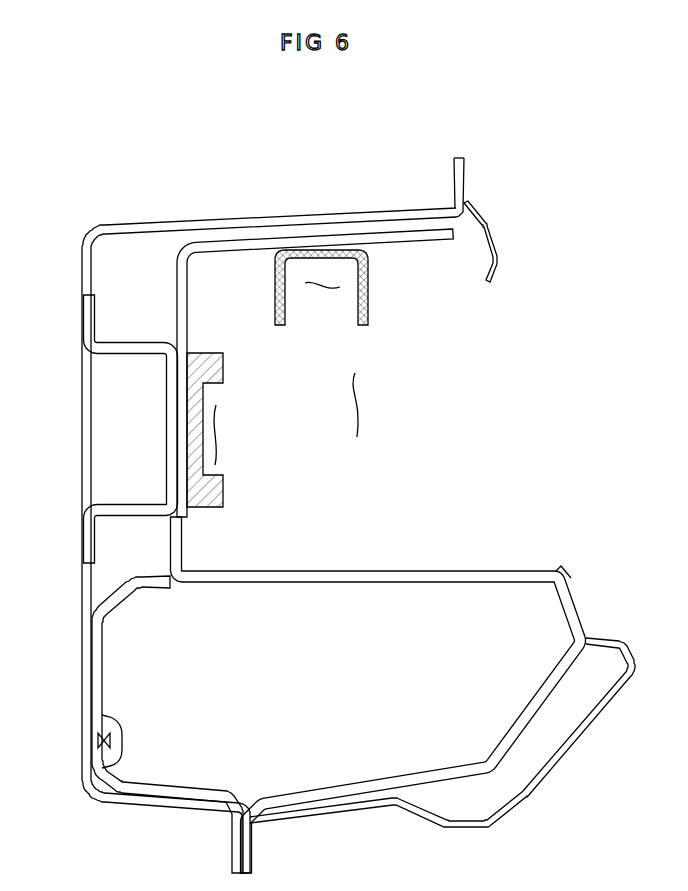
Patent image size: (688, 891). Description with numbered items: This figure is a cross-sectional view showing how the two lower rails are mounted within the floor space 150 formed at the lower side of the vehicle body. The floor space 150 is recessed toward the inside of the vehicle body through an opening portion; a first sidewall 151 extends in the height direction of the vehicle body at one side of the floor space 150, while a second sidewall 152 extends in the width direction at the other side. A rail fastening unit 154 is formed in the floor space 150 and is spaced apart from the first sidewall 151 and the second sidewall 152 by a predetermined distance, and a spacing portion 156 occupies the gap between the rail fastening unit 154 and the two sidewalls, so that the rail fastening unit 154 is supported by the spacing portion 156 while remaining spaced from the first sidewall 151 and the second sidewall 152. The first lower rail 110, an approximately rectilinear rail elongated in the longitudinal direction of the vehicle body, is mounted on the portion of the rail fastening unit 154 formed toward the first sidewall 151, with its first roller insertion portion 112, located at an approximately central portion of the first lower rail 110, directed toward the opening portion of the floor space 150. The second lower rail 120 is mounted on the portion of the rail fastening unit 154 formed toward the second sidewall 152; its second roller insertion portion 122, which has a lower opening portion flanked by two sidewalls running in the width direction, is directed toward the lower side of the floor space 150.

The first lower rail 110 is at (200, 363).
The first roller insertion portion 112 is at (217, 433).
The second lower rail 120 is at (362, 295).
The second roller insertion portion 122 is at (330, 286).
The floor space 150 is at (355, 405).
The first sidewall 151 is at (85, 432).
The second sidewall 152 is at (250, 220).
The rail fastening unit 154 is at (385, 243).
The spacing portion 156 is at (133, 512).